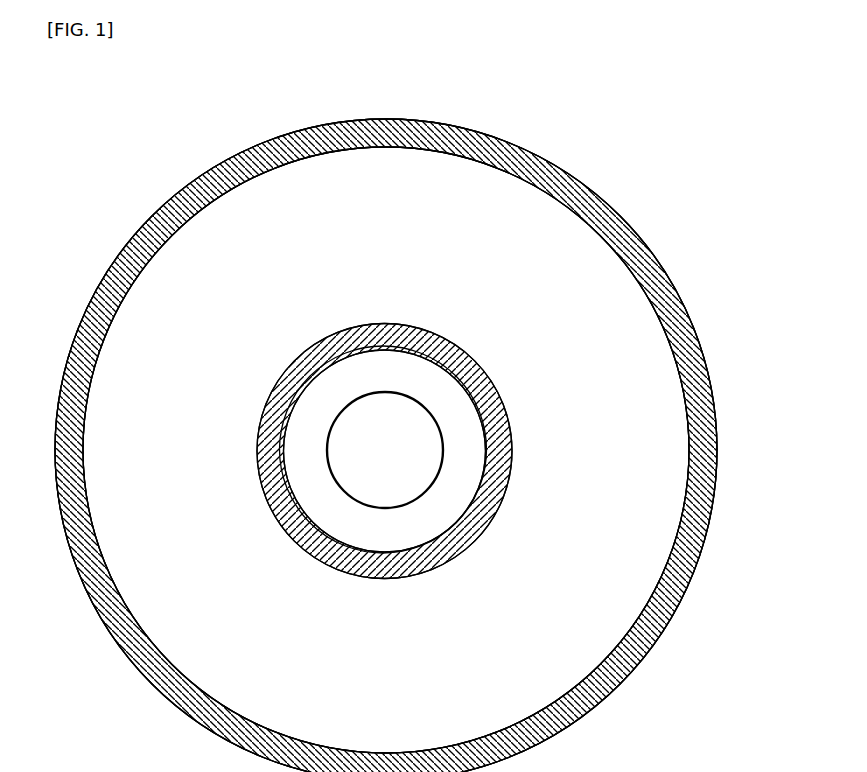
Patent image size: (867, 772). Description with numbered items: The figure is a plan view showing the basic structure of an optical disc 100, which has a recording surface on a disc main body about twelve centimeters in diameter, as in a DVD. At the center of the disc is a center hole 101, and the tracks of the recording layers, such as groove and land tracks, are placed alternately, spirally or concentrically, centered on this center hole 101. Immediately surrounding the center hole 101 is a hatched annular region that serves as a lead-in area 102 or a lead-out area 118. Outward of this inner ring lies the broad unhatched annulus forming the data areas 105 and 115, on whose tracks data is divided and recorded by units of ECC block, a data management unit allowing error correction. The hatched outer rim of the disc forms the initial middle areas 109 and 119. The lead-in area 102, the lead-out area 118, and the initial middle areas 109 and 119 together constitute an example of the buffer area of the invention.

The optical disc 100 is at (552, 154).
The center hole 101 is at (328, 437).
The lead-in area 102 is at (494, 384).
The lead-out area 118 is at (519, 406).
The data area 105 is at (637, 427).
The data area 115 is at (443, 450).
The initial middle area 109 is at (692, 568).
The initial middle area 119 is at (420, 445).